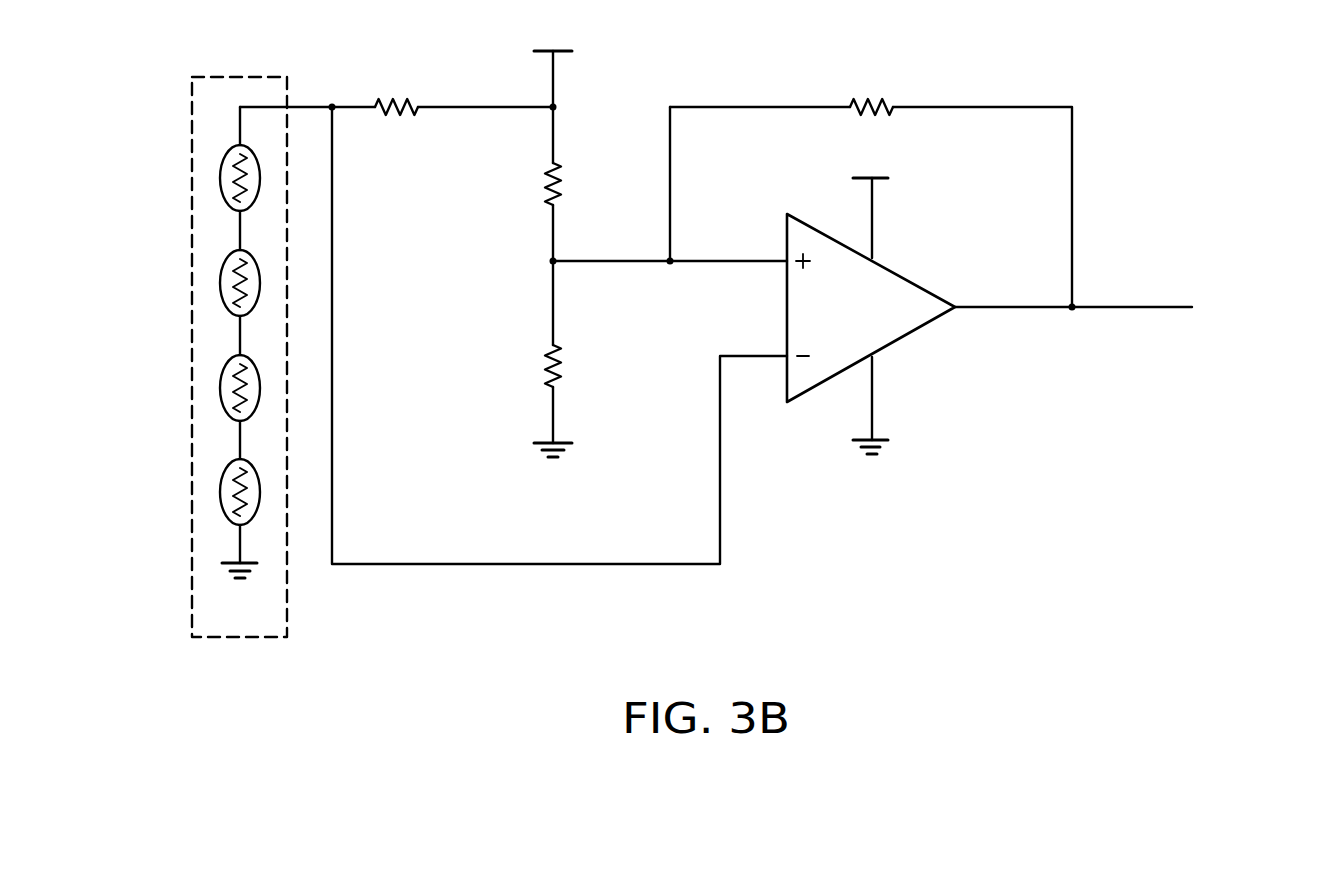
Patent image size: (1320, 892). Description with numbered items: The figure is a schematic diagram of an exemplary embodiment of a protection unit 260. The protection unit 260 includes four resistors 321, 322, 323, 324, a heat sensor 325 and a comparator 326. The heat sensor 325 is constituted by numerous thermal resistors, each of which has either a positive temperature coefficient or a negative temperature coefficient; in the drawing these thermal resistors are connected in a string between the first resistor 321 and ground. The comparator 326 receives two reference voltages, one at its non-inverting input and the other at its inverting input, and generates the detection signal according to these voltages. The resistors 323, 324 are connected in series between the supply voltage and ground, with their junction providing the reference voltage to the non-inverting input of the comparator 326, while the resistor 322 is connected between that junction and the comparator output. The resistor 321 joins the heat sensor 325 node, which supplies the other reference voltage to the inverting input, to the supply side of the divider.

The protection unit 260 is at (1227, 78).
The resistor 321 is at (392, 97).
The resistor 322 is at (866, 97).
The resistor 323 is at (546, 184).
The resistor 324 is at (546, 372).
The heat sensor 325 is at (192, 357).
The comparator 326 is at (907, 278).